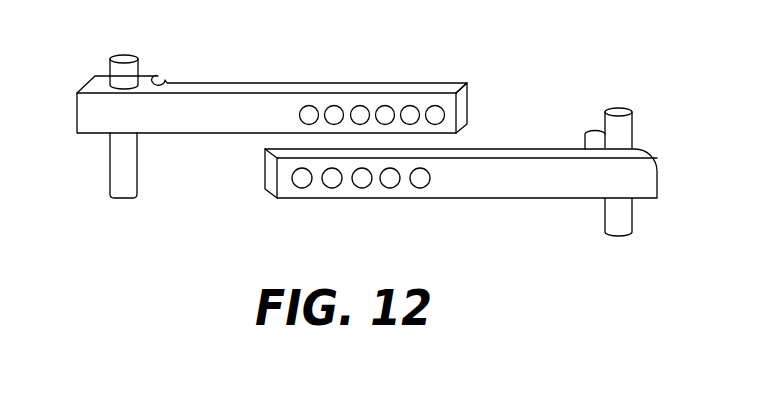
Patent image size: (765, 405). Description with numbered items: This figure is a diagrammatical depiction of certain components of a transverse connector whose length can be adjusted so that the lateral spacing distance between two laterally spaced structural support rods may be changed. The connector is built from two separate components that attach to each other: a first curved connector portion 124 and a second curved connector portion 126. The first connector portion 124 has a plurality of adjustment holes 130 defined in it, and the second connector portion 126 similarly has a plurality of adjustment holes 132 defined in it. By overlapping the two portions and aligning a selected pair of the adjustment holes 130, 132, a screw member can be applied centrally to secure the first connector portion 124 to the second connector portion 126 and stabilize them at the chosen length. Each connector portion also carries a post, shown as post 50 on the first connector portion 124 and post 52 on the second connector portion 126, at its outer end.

The first curved connector portion 124 is at (196, 104).
The second curved connector portion 126 is at (517, 175).
The adjustment holes 130 is at (385, 106).
The adjustment holes 132 is at (418, 186).
The first post 50 is at (123, 192).
The second post 52 is at (623, 220).